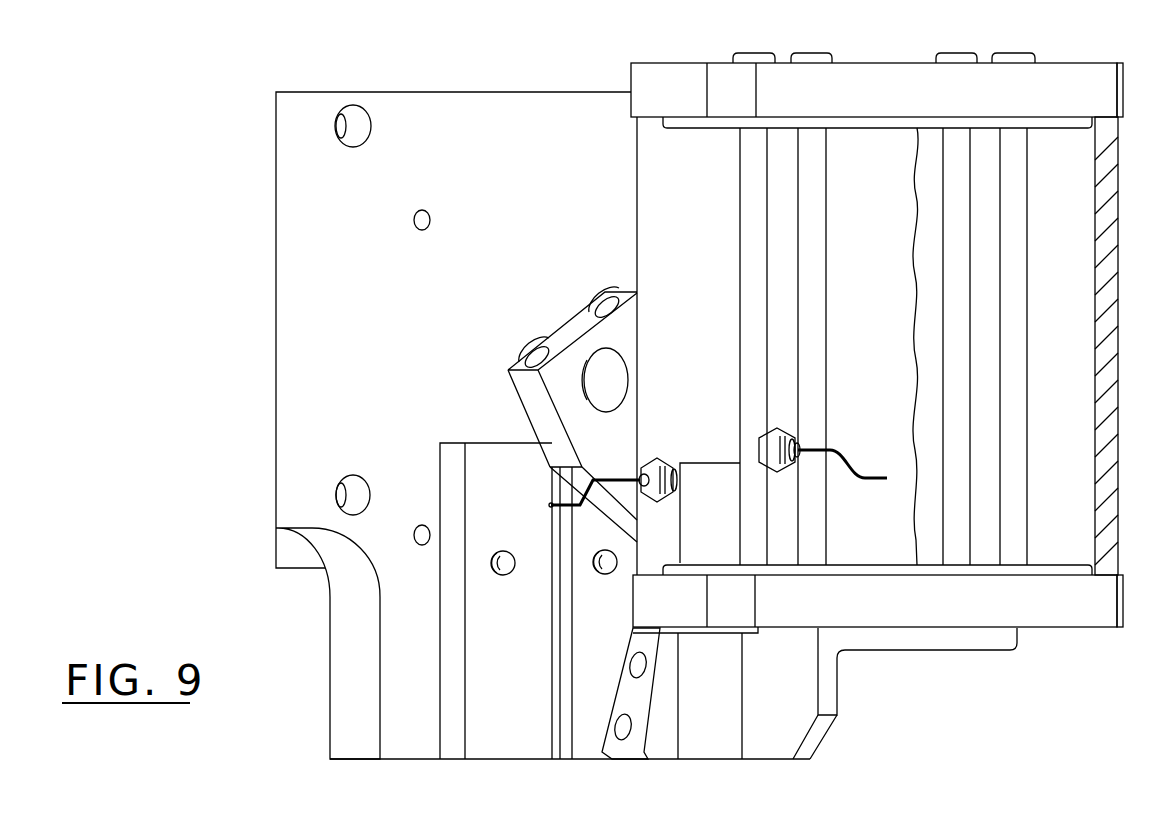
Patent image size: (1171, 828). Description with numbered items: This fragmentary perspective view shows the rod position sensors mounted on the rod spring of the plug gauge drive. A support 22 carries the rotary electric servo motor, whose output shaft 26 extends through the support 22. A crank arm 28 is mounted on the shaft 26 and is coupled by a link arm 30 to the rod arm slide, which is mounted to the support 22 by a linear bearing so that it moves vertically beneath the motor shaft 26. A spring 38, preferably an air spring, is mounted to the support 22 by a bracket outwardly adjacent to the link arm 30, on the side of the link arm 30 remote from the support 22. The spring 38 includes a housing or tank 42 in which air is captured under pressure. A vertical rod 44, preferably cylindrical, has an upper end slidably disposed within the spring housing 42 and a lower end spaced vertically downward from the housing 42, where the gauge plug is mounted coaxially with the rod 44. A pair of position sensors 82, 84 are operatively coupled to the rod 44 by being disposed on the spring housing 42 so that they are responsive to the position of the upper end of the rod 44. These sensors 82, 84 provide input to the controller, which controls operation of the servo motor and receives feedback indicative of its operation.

The support 22 is at (445, 105).
The output shaft 26 is at (610, 373).
The crank arm 28 is at (567, 422).
The link arm 30 is at (628, 685).
The spring 38 is at (1133, 50).
The spring housing 42 is at (1112, 200).
The vertical rod 44 is at (725, 747).
The position sensor 82 is at (792, 430).
The position sensor 84 is at (662, 460).